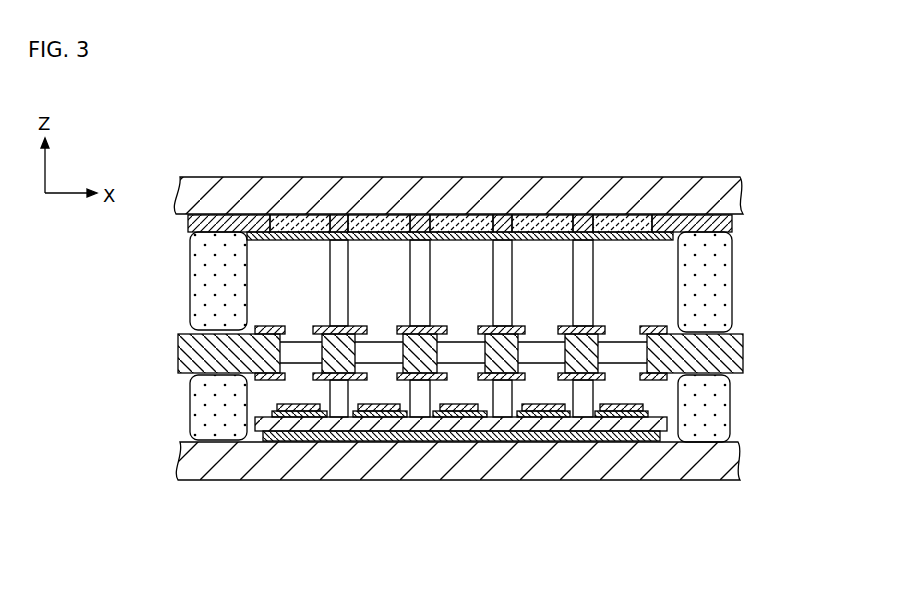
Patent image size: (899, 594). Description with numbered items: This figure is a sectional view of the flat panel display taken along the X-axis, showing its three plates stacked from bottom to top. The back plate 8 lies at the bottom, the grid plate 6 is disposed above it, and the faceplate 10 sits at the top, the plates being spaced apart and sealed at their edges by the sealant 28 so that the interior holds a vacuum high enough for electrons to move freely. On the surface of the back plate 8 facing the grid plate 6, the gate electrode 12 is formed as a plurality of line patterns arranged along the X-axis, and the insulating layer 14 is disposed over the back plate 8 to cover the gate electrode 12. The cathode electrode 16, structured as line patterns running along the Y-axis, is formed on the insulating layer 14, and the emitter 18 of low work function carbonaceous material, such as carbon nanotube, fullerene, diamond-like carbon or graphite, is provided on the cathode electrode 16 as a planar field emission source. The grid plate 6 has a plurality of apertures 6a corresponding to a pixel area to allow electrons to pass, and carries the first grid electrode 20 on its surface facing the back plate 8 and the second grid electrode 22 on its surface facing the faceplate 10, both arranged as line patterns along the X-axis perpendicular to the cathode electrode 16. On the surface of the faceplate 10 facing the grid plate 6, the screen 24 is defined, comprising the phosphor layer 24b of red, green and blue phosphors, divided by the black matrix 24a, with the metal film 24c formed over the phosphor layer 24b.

The grid plate 6 is at (491, 324).
The apertures 6a is at (622, 345).
The back plate 8 is at (262, 482).
The faceplate 10 is at (325, 176).
The gate electrode 12 is at (444, 425).
The insulating layer 14 is at (499, 436).
The cathode electrode 16 is at (370, 417).
The emitter 18 is at (547, 414).
The first grid electrode 20 is at (417, 380).
The second grid electrode 22 is at (440, 327).
The screen 24 is at (460, 174).
The black matrix 24a is at (432, 230).
The phosphor layer 24b is at (541, 230).
The metal film 24c is at (622, 191).
The sealant 28 is at (195, 400).